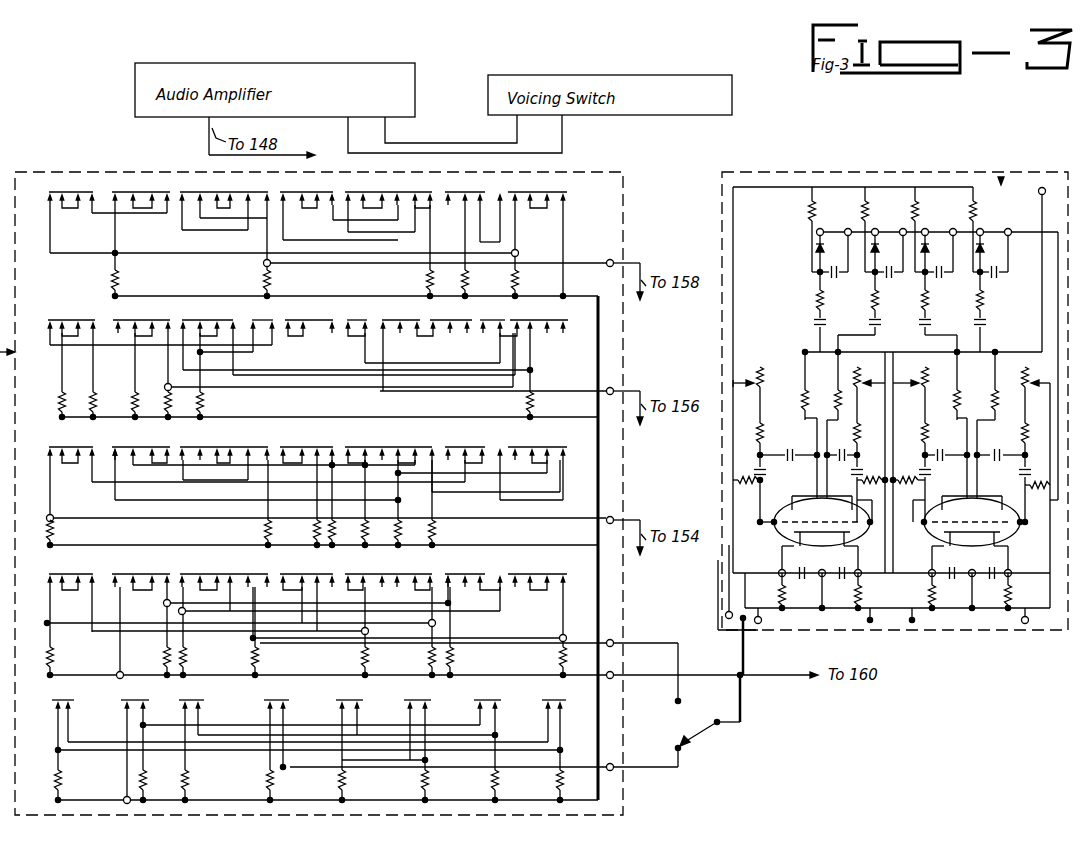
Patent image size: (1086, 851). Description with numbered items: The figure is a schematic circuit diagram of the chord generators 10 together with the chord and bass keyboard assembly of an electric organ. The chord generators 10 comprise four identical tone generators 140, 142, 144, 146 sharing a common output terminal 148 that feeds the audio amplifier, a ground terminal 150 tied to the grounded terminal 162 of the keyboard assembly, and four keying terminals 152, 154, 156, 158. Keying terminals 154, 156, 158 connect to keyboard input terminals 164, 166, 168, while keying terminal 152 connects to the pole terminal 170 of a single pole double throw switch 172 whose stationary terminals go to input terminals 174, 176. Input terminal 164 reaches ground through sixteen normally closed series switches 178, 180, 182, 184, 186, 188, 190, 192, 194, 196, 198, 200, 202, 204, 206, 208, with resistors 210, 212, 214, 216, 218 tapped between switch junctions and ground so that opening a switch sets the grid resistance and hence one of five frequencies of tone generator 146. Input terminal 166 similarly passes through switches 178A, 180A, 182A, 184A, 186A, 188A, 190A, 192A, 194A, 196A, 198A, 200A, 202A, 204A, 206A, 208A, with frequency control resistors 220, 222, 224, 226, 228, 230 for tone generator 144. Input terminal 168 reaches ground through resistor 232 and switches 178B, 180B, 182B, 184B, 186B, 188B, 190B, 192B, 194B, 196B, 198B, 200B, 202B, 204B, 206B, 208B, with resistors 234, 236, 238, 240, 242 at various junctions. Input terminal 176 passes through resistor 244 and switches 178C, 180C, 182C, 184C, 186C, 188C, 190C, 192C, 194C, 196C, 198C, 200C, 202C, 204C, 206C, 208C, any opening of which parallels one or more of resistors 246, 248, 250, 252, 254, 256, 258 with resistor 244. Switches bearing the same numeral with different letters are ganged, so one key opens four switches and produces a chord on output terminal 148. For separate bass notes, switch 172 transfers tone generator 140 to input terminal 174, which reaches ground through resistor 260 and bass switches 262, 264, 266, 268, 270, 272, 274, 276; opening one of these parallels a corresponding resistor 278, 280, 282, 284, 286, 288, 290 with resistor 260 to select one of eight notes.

The chord generators 10 is at (989, 165).
The tone generator 140 is at (766, 414).
The tone generator 142 is at (870, 398).
The tone generator 144 is at (914, 403).
The tone generator 146 is at (1017, 416).
The output terminal 148 is at (702, 582).
The ground terminal 150 is at (717, 617).
The keying terminal 152 is at (783, 635).
The keying terminal 154 is at (849, 631).
The keying terminal 156 is at (927, 631).
The keying terminal 158 is at (1040, 631).
The grounded terminal 162 is at (713, 663).
The input terminal 164 is at (638, 268).
The input terminal 166 is at (638, 394).
The input terminal 168 is at (638, 523).
The pole terminal 170 is at (710, 710).
The single pole double throw switch 172 is at (713, 758).
The input terminal 174 is at (644, 754).
The input terminal 176 is at (644, 660).
The normally closed switch 178 is at (569, 187).
The normally closed switch 180 is at (535, 187).
The normally closed switch 182 is at (488, 187).
The normally closed switch 184 is at (451, 213).
The normally closed switch 186 is at (420, 187).
The normally closed switch 188 is at (387, 187).
The normally closed switch 190 is at (355, 187).
The normally closed switch 192 is at (320, 187).
The normally closed switch 194 is at (284, 218).
The normally closed switch 196 is at (276, 187).
The normally closed switch 198 is at (243, 187).
The normally closed switch 200 is at (209, 187).
The normally closed switch 202 is at (176, 187).
The normally closed switch 204 is at (139, 187).
The normally closed switch 206 is at (98, 187).
The normally closed switch 208 is at (61, 187).
The normally closed switch 178A is at (568, 354).
The normally closed switch 180A is at (552, 311).
The normally closed switch 182A is at (496, 311).
The normally closed switch 184A is at (430, 364).
The normally closed switch 186A is at (425, 311).
The normally closed switch 188A is at (374, 315).
The normally closed switch 190A is at (333, 347).
The normally closed switch 192A is at (346, 311).
The normally closed switch 194A is at (276, 311).
The normally closed switch 196A is at (273, 347).
The normally closed switch 198A is at (242, 315).
The normally closed switch 200A is at (207, 311).
The normally closed switch 202A is at (157, 311).
The normally closed switch 204A is at (119, 342).
The normally closed switch 206A is at (105, 315).
The normally closed switch 208A is at (71, 311).
The normally closed switch 178B is at (620, 462).
The normally closed switch 180B is at (556, 443).
The normally closed switch 182B is at (522, 483).
The normally closed switch 184B is at (471, 443).
The normally closed switch 186B is at (457, 483).
The normally closed switch 188B is at (411, 443).
The normally closed switch 190B is at (371, 443).
The normally closed switch 192B is at (306, 443).
The normally closed switch 194B is at (257, 443).
The normally closed switch 196B is at (239, 483).
The normally closed switch 198B is at (194, 443).
The normally closed switch 200B is at (165, 483).
The normally closed switch 202B is at (135, 443).
The normally closed switch 204B is at (88, 479).
The normally closed switch 206B is at (73, 471).
The normally closed switch 208B is at (70, 443).
The normally closed switch 178C is at (571, 570).
The normally closed switch 180C is at (537, 596).
The normally closed switch 182C is at (520, 571).
The normally closed switch 184C is at (470, 593).
The normally closed switch 186C is at (467, 570).
The normally closed switch 188C is at (418, 571).
The normally closed switch 190C is at (379, 571).
The normally closed switch 192C is at (335, 571).
The normally closed switch 194C is at (285, 571).
The normally closed switch 196C is at (232, 570).
The normally closed switch 198C is at (169, 570).
The normally closed switch 200C is at (204, 593).
The normally closed switch 202C is at (147, 600).
The normally closed switch 204C is at (114, 571).
The normally closed switch 206C is at (73, 595).
The normally closed switch 208C is at (70, 570).
The resistor 210 is at (88, 281).
The resistor 212 is at (238, 281).
The resistor 214 is at (406, 281).
The resistor 216 is at (484, 281).
The resistor 218 is at (532, 281).
The frequency control resistor 220 is at (76, 395).
The frequency control resistor 222 is at (108, 395).
The frequency control resistor 224 is at (119, 406).
The frequency control resistor 226 is at (156, 390).
The frequency control resistor 228 is at (220, 406).
The frequency control resistor 230 is at (506, 406).
The resistor 232 is at (69, 534).
The resistor 234 is at (241, 534).
The resistor 236 is at (299, 534).
The resistor 238 is at (345, 522).
The resistor 240 is at (379, 522).
The frequency control resistor 242 is at (455, 534).
The resistor 244 is at (275, 662).
The resistor 246 is at (69, 662).
The resistor 248 is at (148, 658).
The resistor 250 is at (203, 662).
The resistor 252 is at (347, 662).
The resistor 254 is at (409, 662).
The resistor 256 is at (469, 662).
The resistor 258 is at (536, 662).
The resistor 260 is at (290, 786).
The normally closed switch 262 is at (252, 694).
The normally closed switch 264 is at (392, 694).
The normally closed switch 266 is at (44, 694).
The normally closed switch 268 is at (533, 694).
The normally closed switch 270 is at (167, 694).
The normally closed switch 272 is at (321, 694).
The normally closed switch 274 is at (461, 694).
The normally closed switch 276 is at (111, 694).
The resistor 278 is at (78, 786).
The resistor 280 is at (110, 777).
The resistor 282 is at (205, 782).
The resistor 284 is at (362, 786).
The resistor 286 is at (445, 786).
The resistor 288 is at (515, 786).
The resistor 290 is at (580, 794).